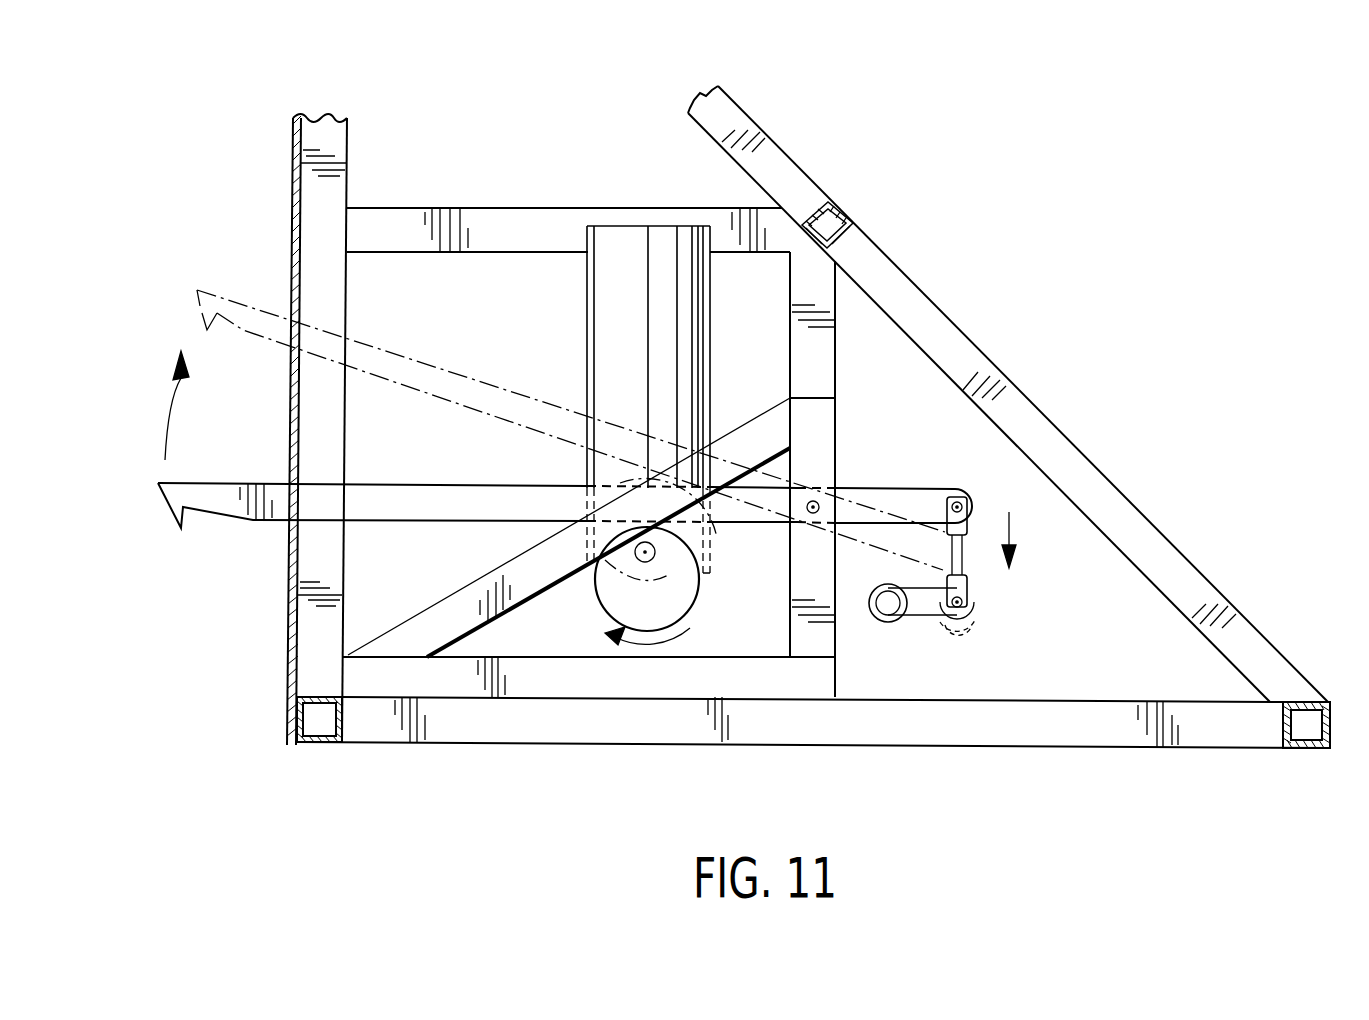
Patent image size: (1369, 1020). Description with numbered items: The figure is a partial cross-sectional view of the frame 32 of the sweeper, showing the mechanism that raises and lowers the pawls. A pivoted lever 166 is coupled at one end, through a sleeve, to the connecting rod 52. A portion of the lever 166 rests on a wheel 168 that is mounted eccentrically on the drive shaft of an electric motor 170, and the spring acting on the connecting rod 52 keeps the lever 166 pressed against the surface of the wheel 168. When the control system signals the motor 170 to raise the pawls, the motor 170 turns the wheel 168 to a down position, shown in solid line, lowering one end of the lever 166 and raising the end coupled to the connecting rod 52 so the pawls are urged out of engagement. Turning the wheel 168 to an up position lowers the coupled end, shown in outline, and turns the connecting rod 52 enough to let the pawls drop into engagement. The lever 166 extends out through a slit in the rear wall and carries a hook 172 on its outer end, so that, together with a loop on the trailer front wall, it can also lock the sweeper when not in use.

The frame 32 is at (918, 312).
The connecting rod 52 is at (888, 622).
The pivoted lever 166 is at (915, 489).
The wheel 168 is at (593, 598).
The electric motor 170 is at (618, 252).
The hook 172 is at (168, 513).